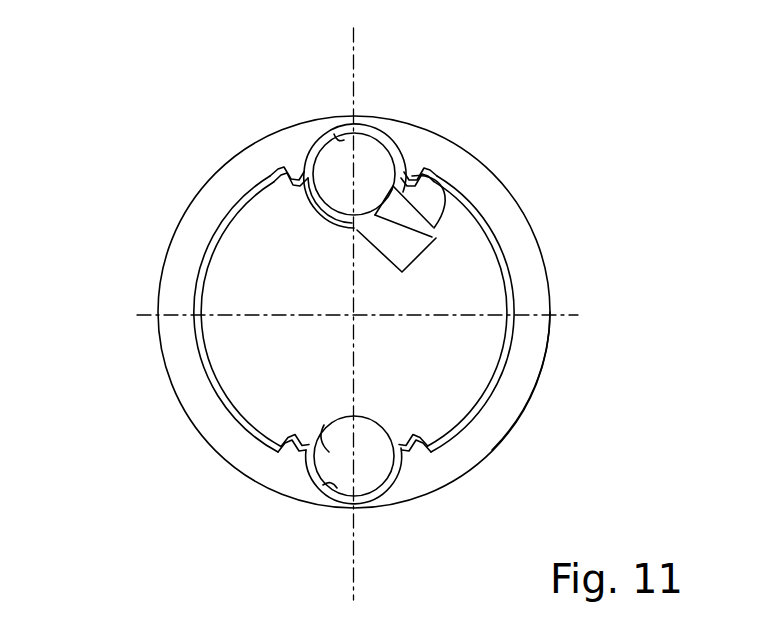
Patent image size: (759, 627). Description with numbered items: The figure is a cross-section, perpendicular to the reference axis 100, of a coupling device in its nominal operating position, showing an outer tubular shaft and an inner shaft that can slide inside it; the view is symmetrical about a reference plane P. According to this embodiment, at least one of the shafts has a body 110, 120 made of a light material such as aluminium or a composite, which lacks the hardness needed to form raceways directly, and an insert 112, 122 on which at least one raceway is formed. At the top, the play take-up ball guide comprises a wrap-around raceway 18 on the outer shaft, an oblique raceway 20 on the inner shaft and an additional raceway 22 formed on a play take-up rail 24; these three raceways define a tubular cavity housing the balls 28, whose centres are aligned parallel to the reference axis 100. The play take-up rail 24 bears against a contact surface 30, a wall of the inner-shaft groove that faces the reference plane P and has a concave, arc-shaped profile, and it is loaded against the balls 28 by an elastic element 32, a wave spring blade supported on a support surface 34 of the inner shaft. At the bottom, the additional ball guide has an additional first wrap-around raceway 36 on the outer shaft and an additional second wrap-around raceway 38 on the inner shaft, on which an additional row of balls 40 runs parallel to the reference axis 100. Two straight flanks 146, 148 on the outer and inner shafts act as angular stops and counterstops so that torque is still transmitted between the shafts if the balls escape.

The wrap-around raceway 18 is at (333, 140).
The oblique raceway 20 is at (304, 158).
The additional raceway 22 is at (410, 183).
The play take-up rail 24 is at (413, 215).
The balls 28 is at (368, 160).
The contact surface 30 is at (438, 200).
The elastic element 32 is at (397, 247).
The support surface 34 is at (352, 230).
The additional first wrap-around raceway 36 is at (320, 491).
The additional second wrap-around raceway 38 is at (340, 463).
The additional balls 40 is at (322, 490).
The reference axis 100 is at (478, 395).
The body 110 is at (525, 350).
The insert 112 is at (305, 166).
The body 120 is at (462, 287).
The insert 122 is at (283, 186).
The straight flank 146 is at (200, 352).
The straight flank 148 is at (198, 323).
The reference plane P is at (356, 590).